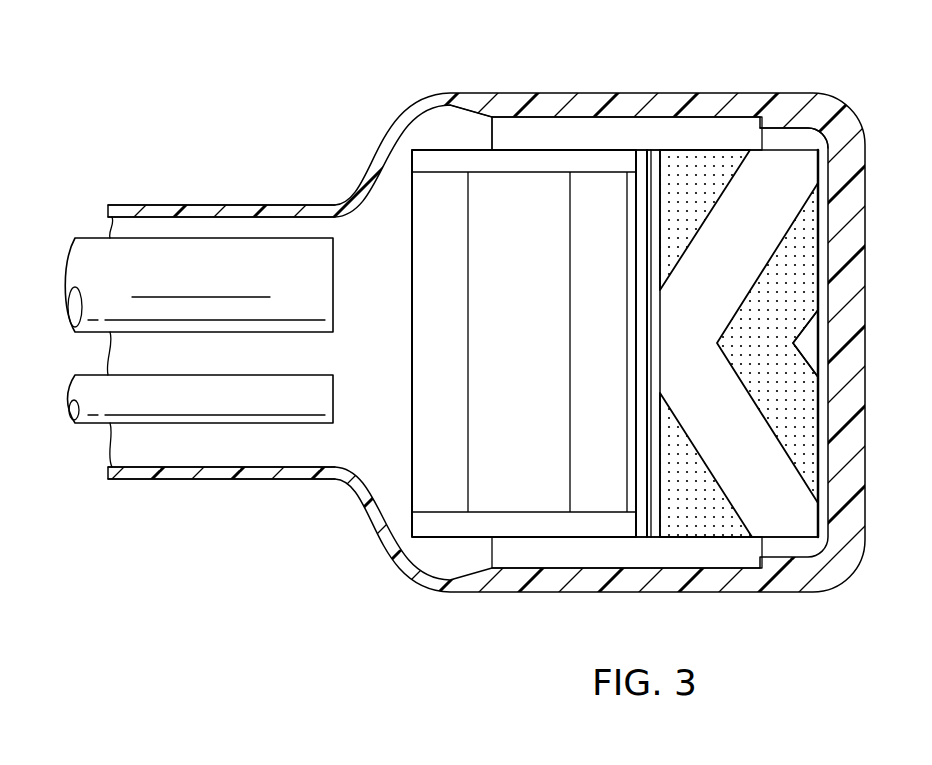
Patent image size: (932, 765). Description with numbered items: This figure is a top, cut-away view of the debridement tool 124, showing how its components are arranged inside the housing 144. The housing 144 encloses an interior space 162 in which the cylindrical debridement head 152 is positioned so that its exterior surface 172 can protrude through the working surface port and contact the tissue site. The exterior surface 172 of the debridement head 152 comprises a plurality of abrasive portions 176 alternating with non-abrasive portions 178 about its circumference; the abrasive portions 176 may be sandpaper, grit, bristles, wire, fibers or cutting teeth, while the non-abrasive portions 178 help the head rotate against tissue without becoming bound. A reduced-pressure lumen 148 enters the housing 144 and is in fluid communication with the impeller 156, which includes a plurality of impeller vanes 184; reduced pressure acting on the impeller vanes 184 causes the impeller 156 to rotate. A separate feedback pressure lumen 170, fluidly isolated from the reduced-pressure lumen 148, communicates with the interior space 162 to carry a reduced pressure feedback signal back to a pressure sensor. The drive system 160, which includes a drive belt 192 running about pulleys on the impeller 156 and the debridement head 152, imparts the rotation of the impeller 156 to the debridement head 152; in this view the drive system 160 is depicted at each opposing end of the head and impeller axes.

The debridement tool 124 is at (316, 131).
The housing 144 is at (640, 93).
The reduced-pressure lumen 148 is at (177, 238).
The debridement head 152 is at (812, 137).
The impeller 156 is at (461, 137).
The drive system 160 is at (587, 107).
The interior space 162 is at (267, 453).
The feedback pressure lumen 170 is at (172, 423).
The exterior surface 172 is at (808, 251).
The abrasive portion 176 is at (705, 154).
The non-abrasive portion 178 is at (812, 345).
The impeller vanes 184 is at (428, 346).
The drive belt 192 is at (534, 114).